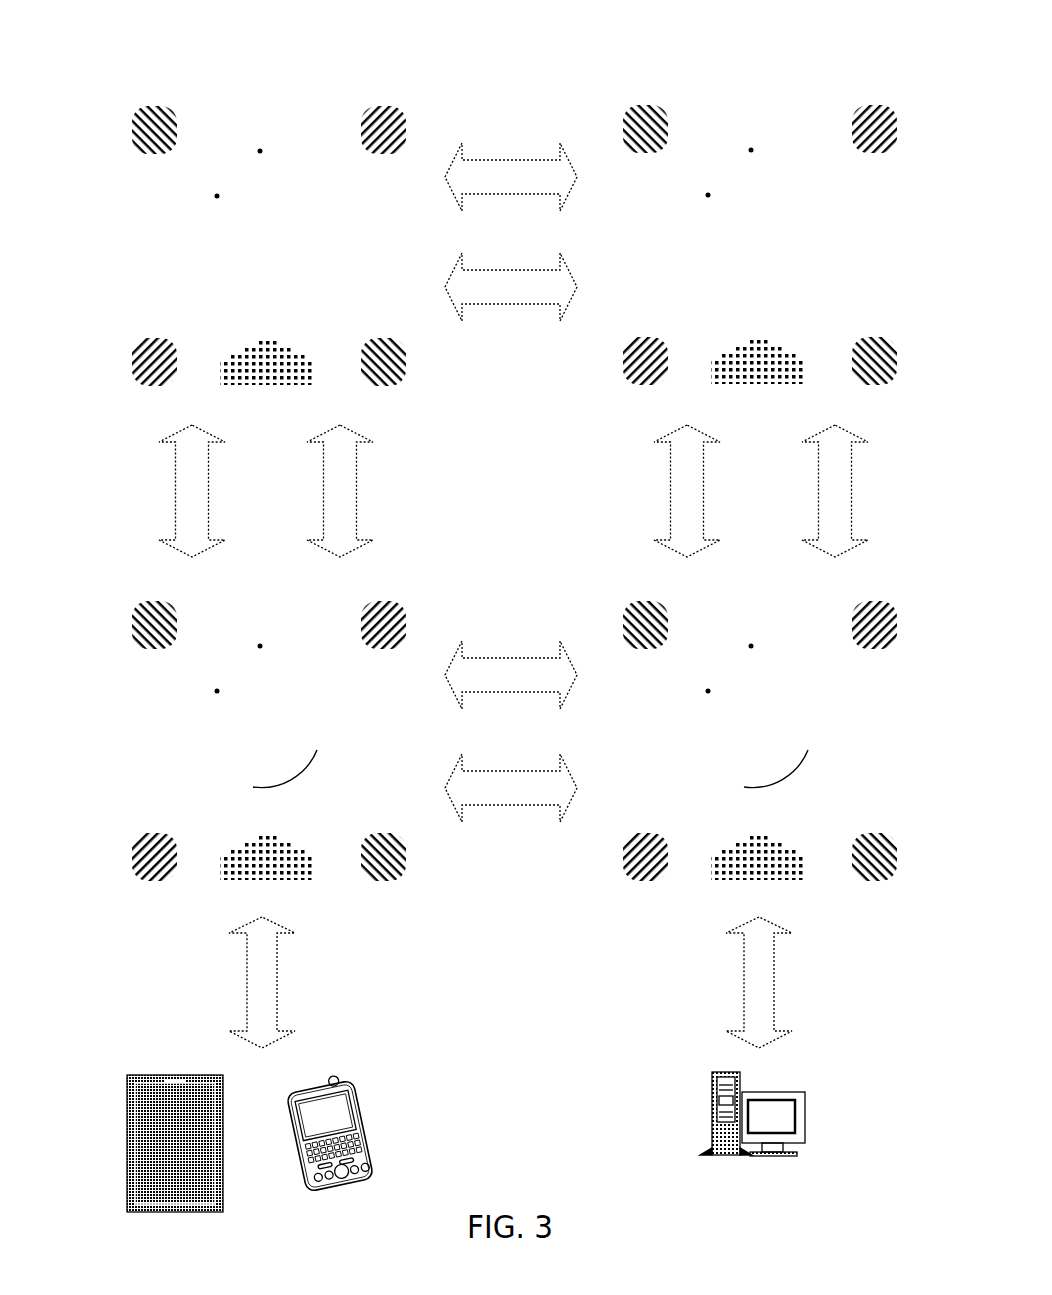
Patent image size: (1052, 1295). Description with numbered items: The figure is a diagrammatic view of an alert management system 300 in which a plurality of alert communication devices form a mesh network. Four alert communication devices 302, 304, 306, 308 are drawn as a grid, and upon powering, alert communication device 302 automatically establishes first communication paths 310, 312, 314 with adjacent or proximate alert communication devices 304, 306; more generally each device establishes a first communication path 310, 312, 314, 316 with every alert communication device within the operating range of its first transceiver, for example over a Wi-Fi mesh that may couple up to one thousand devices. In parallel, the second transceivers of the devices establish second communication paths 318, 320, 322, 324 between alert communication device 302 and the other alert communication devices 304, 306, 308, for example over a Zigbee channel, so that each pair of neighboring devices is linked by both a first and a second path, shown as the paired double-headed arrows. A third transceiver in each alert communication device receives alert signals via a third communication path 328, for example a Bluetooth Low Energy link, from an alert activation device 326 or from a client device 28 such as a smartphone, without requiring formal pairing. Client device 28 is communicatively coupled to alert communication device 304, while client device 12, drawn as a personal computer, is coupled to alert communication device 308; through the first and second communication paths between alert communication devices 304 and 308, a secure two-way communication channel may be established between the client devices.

The alert management system 300 is at (73, 35).
The alert communication device 302 is at (133, 411).
The alert communication device 304 is at (133, 916).
The alert communication device 306 is at (891, 411).
The alert communication device 308 is at (639, 917).
The first communication path 310 is at (159, 572).
The first communication path 312 is at (528, 126).
The first communication path 314 is at (517, 849).
The first communication path 316 is at (863, 571).
The second communication path 318 is at (365, 570).
The second communication path 320 is at (518, 346).
The second communication path 322 is at (529, 629).
The second communication path 324 is at (655, 571).
The alert activation device 326 is at (121, 1056).
The third communication path 328 is at (301, 995).
The client device 28 is at (368, 1128).
The client device 12 is at (705, 1097).